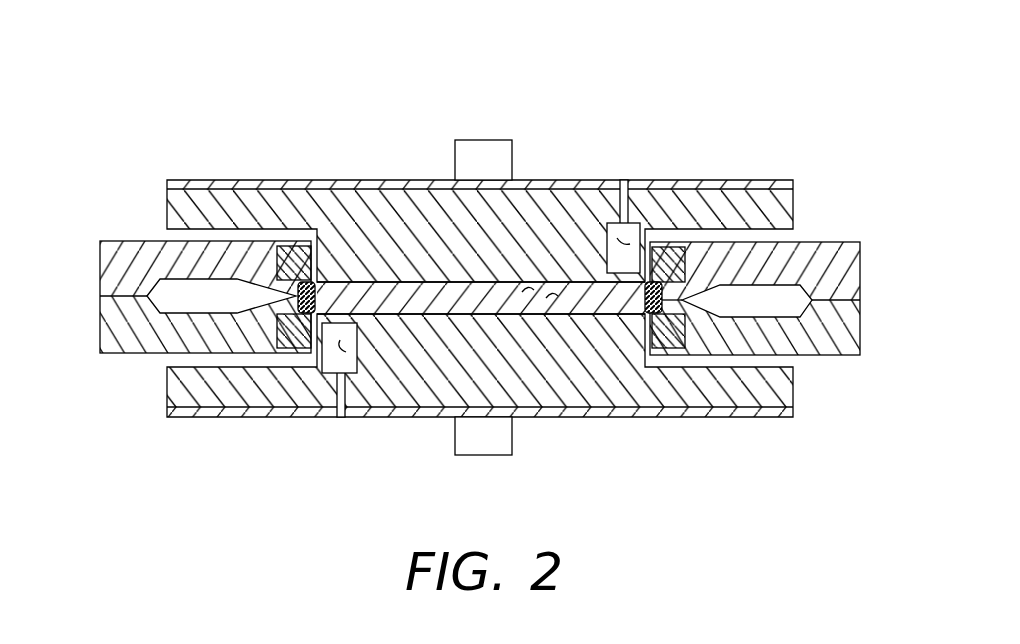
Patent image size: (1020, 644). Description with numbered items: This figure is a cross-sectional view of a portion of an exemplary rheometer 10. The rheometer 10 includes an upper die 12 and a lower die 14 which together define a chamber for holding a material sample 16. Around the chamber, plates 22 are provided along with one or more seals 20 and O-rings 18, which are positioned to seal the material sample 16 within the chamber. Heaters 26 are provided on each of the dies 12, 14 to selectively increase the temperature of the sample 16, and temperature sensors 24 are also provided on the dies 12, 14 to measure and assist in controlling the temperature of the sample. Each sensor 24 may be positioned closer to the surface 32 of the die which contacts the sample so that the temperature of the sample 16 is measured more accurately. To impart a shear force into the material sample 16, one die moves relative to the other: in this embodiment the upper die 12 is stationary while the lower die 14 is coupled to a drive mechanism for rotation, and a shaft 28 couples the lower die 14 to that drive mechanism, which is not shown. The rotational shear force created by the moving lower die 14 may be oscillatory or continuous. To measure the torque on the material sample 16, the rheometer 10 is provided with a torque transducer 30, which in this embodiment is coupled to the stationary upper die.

The rheometer 10 is at (226, 79).
The upper die 12 is at (793, 210).
The lower die 14 is at (167, 392).
The material sample 16 is at (430, 281).
The O-ring 18 is at (303, 313).
The seal 20 is at (686, 264).
The plate 22 is at (117, 240).
The temperature sensor 24 is at (625, 247).
The heater 26 is at (273, 180).
The shaft 28 is at (505, 455).
The torque transducer 30 is at (497, 140).
The surface of the die 32 is at (522, 293).